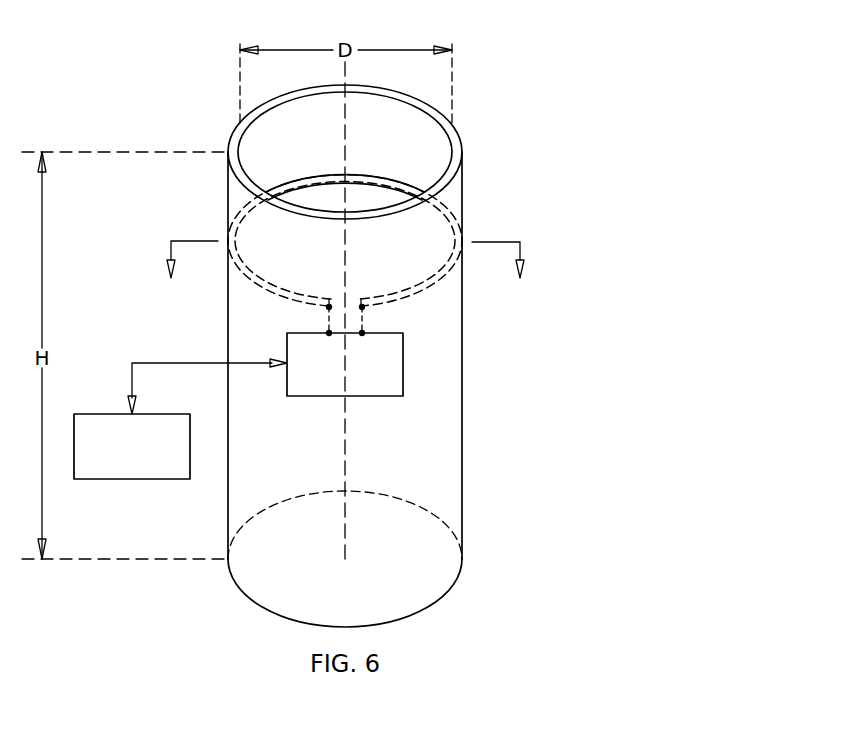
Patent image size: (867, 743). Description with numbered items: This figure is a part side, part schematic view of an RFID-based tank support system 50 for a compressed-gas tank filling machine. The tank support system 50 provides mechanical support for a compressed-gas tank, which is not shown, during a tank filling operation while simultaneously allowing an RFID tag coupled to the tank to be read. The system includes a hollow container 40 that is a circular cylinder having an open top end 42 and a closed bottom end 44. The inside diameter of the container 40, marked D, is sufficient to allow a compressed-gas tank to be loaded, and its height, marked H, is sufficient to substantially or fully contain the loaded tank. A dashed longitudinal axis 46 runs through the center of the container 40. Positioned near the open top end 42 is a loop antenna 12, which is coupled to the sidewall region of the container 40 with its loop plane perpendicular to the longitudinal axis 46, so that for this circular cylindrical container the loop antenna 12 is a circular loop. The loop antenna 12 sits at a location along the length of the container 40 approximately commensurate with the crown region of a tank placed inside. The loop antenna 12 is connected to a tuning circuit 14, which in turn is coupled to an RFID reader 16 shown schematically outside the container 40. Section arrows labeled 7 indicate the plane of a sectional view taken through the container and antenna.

The tank support system 50 is at (194, 97).
The loop antenna 12 is at (402, 182).
The tuning circuit 14 is at (403, 363).
The RFID reader 16 is at (120, 480).
The hollow container 40 is at (462, 428).
The open end 42 is at (368, 86).
The closed end 44 is at (438, 601).
The longitudinal axis 46 is at (345, 460).
The section line for FIG. 7 is at (346, 272).